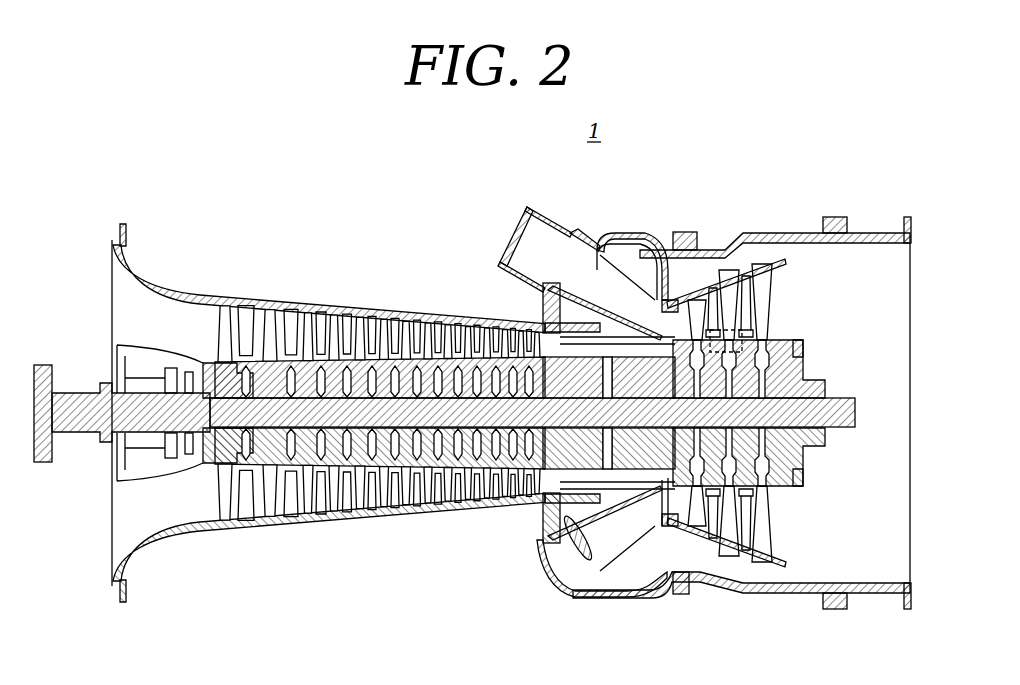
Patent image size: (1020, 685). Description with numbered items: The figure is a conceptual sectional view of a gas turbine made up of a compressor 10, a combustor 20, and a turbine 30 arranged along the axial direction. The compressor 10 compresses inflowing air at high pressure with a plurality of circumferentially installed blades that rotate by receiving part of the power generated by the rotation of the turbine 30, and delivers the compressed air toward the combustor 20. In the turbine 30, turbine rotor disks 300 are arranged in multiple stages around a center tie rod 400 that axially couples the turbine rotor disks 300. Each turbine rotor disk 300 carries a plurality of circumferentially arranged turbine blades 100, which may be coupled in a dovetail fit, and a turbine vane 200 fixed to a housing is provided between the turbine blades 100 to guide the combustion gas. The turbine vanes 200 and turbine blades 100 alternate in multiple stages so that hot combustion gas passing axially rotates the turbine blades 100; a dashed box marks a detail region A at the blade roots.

The compressor 10 is at (334, 280).
The combustor 20 is at (620, 200).
The turbine 30 is at (786, 215).
The turbine blade 100 is at (710, 312).
The turbine vane 200 is at (672, 302).
The turbine rotor disk 300 is at (712, 525).
The center tie rod 400 is at (612, 415).
The detail region A is at (745, 333).